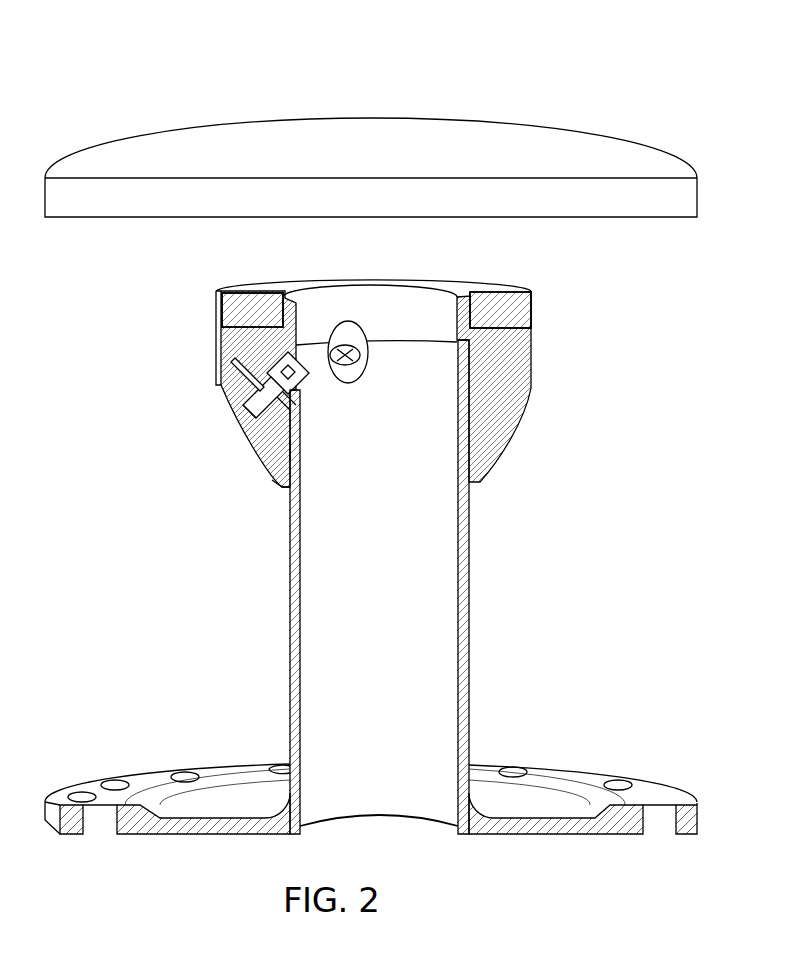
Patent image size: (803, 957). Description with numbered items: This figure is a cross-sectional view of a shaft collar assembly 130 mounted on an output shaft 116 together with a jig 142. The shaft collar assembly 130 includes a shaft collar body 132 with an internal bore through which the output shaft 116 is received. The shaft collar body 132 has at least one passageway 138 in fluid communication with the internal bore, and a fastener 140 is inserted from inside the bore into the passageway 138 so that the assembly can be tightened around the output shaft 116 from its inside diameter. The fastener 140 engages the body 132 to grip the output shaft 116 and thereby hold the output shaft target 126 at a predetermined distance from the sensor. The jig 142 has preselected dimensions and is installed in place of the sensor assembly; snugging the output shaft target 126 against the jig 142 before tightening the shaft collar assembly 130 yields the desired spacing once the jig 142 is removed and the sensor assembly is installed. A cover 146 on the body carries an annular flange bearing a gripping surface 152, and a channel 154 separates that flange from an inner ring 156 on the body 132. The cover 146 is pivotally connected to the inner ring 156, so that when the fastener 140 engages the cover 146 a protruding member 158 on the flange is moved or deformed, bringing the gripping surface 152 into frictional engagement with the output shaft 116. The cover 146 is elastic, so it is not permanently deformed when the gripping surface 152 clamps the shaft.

The shaft collar assembly 130 is at (266, 60).
The jig 142 is at (380, 161).
The output shaft target 126 is at (525, 316).
The inner ring 156 is at (283, 322).
The passageway 138 is at (340, 338).
The shaft collar body 132 is at (216, 372).
The cover 146 is at (236, 376).
The fastener 140 is at (268, 418).
The protruding member 158 is at (280, 430).
The channel 154 is at (286, 447).
The gripping surface 152 is at (282, 488).
The output shaft 116 is at (452, 626).